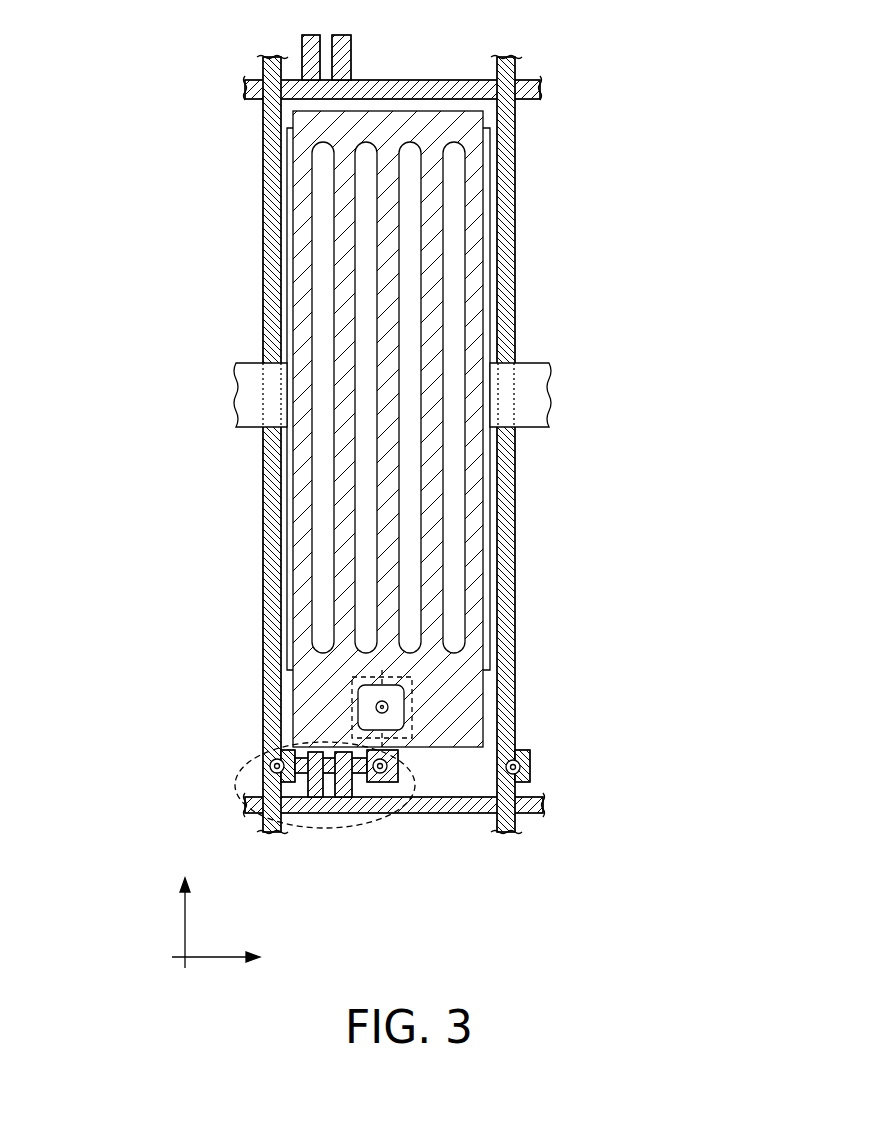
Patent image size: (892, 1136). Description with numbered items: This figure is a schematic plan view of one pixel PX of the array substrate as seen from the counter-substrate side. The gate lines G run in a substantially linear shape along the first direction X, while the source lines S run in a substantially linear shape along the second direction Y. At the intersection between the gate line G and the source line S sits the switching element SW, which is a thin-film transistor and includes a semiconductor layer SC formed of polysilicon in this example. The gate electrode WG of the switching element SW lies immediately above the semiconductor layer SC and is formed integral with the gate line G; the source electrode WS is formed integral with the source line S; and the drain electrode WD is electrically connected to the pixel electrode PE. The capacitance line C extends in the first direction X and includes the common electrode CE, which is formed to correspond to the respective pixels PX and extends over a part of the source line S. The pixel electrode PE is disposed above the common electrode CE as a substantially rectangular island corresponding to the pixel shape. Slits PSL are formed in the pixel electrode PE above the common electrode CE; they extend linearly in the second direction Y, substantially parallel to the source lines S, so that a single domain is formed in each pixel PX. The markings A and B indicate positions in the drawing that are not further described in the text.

The gate line G is at (245, 87).
The source line S is at (268, 57).
The pixel PX is at (336, 378).
The pixel electrode PE is at (295, 694).
The common electrode CE is at (388, 399).
The slit PSL is at (322, 513).
The source electrode WS is at (290, 732).
The drain electrode WD is at (400, 785).
The gate electrode WG is at (332, 813).
The semiconductor layer SC is at (373, 785).
The switching element SW is at (312, 826).
The line A is at (397, 766).
The line B (cross-section position) B is at (378, 409).
The capacitance line C is at (232, 410).
The first direction X is at (228, 958).
The second direction Y is at (185, 908).